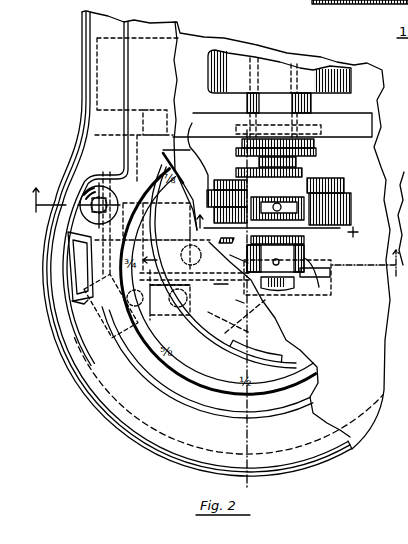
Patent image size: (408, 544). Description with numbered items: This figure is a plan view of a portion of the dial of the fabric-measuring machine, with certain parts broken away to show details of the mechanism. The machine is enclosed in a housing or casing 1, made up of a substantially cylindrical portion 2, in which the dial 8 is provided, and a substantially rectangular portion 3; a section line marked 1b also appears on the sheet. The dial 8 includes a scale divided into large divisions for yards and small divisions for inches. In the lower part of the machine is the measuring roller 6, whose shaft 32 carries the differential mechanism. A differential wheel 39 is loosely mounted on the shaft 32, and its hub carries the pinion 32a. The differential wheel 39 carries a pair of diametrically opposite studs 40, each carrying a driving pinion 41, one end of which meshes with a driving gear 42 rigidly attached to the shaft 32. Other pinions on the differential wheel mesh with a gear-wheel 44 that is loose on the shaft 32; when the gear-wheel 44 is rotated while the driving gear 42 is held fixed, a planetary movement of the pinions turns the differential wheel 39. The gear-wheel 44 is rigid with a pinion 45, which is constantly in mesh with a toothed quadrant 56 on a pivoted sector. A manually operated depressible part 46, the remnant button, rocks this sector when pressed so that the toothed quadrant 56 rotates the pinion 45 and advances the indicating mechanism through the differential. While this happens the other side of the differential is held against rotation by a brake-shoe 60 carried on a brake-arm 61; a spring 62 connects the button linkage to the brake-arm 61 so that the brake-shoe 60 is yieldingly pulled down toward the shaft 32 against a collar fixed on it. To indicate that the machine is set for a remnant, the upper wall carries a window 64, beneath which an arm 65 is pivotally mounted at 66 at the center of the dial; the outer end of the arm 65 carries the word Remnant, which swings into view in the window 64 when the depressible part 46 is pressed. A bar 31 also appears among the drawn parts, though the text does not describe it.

The housing or casing 1 is at (209, 309).
The section line 1b is at (284, 221).
The cylindrical portion 2 is at (148, 449).
The rectangular portion 3 is at (76, 66).
The measuring roller 6 is at (322, 73).
The dial 8 is at (270, 332).
The support bar 31 is at (272, 125).
The shaft 32 is at (290, 107).
The pinion 32a is at (240, 170).
The differential wheel 39 is at (338, 182).
The studs 40 is at (217, 182).
The driving pinion 41 is at (371, 211).
The driving gear 42 is at (305, 184).
The gear-wheel 44 is at (304, 233).
The pinion 45 is at (319, 270).
The depressible part 46 is at (78, 209).
The toothed quadrant 56 is at (247, 263).
The brake-shoe 60 is at (297, 258).
The brake-arm 61 is at (319, 287).
The spring 62 is at (168, 125).
The window 64 is at (82, 285).
The arm 65 is at (242, 305).
The pivot 66 is at (228, 289).